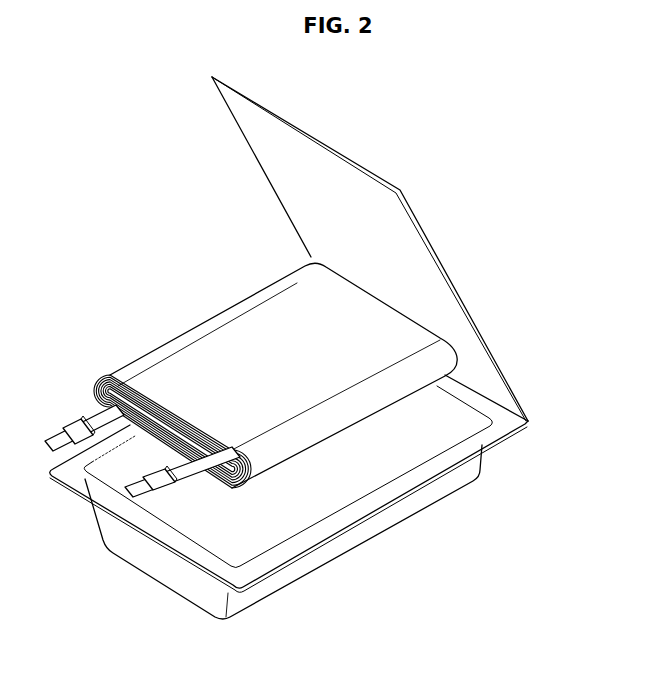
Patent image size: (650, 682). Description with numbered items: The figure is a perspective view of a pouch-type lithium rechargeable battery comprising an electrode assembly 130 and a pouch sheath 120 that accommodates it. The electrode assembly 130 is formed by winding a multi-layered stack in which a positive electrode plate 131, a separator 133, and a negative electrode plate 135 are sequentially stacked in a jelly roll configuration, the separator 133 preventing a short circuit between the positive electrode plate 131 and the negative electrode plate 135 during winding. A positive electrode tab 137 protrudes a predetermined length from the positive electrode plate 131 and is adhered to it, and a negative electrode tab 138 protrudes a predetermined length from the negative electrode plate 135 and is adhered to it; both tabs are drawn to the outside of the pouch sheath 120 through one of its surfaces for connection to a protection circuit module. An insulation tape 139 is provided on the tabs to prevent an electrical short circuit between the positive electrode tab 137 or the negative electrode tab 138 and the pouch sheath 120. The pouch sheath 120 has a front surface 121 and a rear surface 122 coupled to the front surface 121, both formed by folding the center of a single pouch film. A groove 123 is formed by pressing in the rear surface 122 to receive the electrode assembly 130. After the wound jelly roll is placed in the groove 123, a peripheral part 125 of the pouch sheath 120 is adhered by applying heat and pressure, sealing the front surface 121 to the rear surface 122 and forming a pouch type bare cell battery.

The pouch sheath 120 is at (338, 348).
The front surface 121 is at (522, 409).
The rear surface 122 is at (515, 440).
The groove 123 is at (322, 497).
The peripheral part 125 is at (188, 549).
The electrode assembly 130 is at (233, 444).
The positive electrode plate 131 is at (104, 376).
The separator 133 is at (97, 382).
The negative electrode plate 135 is at (97, 397).
The positive electrode tab 137 is at (236, 492).
The negative electrode tab 138 is at (100, 432).
The insulation tape 139 is at (68, 421).